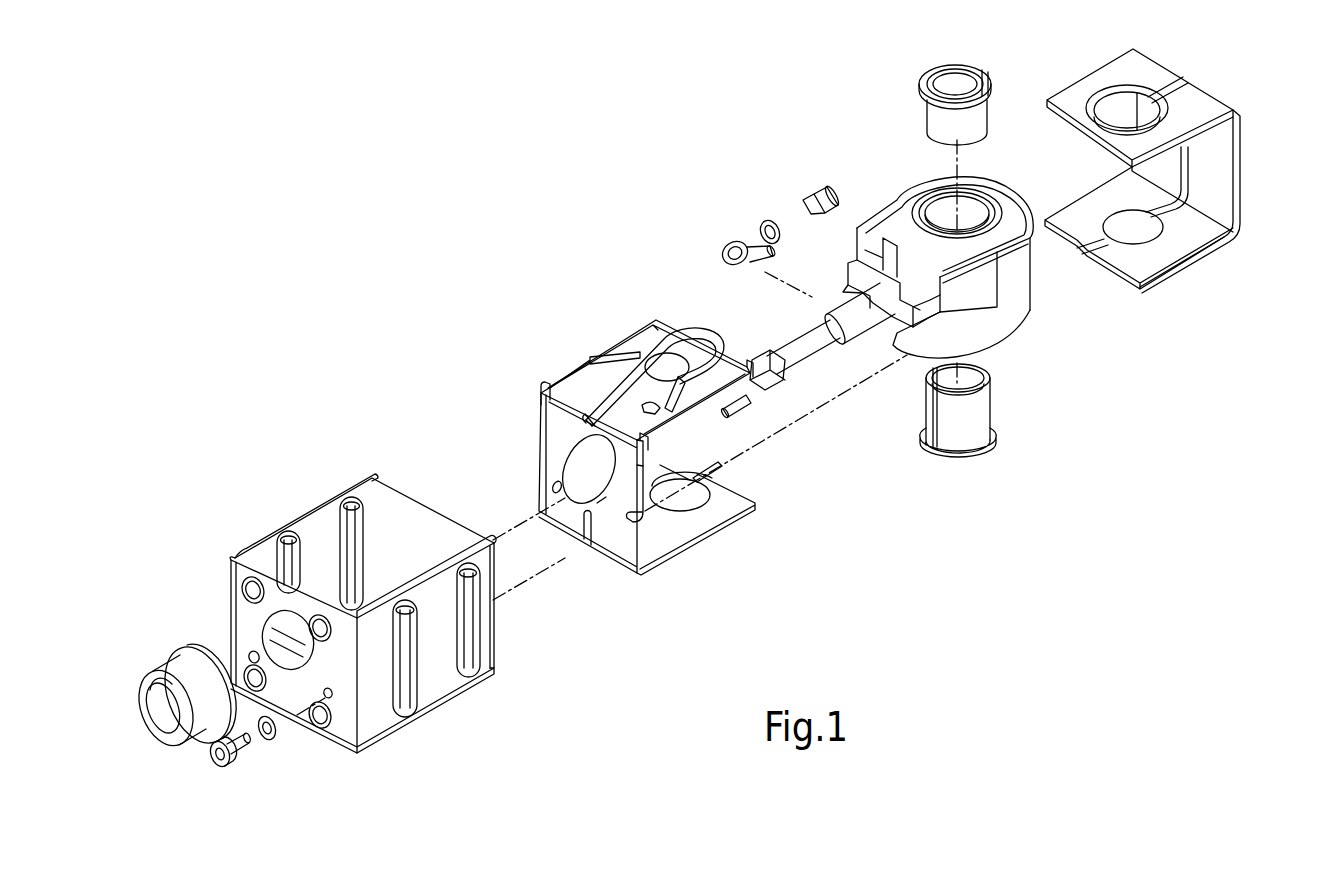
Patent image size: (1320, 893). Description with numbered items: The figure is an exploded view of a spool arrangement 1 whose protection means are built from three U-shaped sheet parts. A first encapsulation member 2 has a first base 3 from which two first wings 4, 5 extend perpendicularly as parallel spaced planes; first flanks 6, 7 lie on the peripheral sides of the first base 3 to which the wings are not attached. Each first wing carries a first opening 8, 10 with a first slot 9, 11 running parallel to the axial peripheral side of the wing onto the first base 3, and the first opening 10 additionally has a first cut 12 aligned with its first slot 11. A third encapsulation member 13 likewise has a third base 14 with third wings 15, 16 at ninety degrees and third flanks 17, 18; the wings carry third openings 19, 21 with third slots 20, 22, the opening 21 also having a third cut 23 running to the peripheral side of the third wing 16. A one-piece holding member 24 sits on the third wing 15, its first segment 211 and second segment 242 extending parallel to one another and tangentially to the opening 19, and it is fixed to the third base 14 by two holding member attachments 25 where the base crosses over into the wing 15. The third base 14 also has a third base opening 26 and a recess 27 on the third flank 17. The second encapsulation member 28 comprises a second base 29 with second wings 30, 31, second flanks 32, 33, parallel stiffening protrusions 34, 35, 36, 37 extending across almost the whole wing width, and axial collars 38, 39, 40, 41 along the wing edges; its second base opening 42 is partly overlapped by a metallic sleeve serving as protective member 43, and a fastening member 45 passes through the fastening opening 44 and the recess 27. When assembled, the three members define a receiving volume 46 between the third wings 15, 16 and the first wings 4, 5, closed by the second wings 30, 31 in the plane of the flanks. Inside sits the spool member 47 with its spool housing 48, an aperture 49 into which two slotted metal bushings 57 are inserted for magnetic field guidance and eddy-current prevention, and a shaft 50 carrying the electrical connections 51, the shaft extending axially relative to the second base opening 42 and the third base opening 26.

The spool arrangement 1 is at (537, 190).
The bushings 57 is at (530, 183).
The first encapsulation member 2 is at (1080, 72).
The first base 3 is at (1220, 163).
The first wing 4 is at (1187, 113).
The first wing 5 is at (1188, 235).
The first flank 6 is at (1238, 190).
The first flank 7 is at (1127, 90).
The first opening 8 is at (1112, 112).
The first slot 9 is at (1167, 95).
The first opening 10 is at (1140, 232).
The first slot 11 is at (1168, 200).
The first cut 12 is at (1083, 250).
The third encapsulation member 13 is at (620, 333).
The third base 14 is at (550, 433).
The third wing 15 is at (583, 387).
The third wing 16 is at (667, 540).
The third flank 17 is at (643, 470).
The third flank 18 is at (540, 470).
The third opening 19 is at (670, 360).
The third slot 20 is at (613, 393).
The third opening 21 is at (680, 503).
The third slot 22 is at (587, 547).
The third cut 23 is at (713, 483).
The holding member 24 is at (697, 333).
The holding member attachment 25 is at (548, 388).
The third base opening 26 is at (603, 493).
The recess 27 is at (638, 524).
The second encapsulation member 28 is at (228, 564).
The second base 29 is at (248, 627).
The second wing 30 is at (317, 540).
The second wing 31 is at (433, 680).
The second flank 32 is at (268, 577).
The second flank 33 is at (300, 718).
The protrusion 34 is at (293, 550).
The protrusion 35 is at (353, 517).
The protrusion 36 is at (403, 717).
The protrusion 37 is at (470, 680).
The collar 38 is at (370, 480).
The collar 39 is at (322, 720).
The collar 40 is at (440, 553).
The collar 41 is at (490, 677).
The second base opening 42 is at (257, 658).
The protective member 43 is at (207, 717).
The fastening opening 44 is at (330, 695).
The fastening member 45 is at (240, 748).
The receiving volume 46 is at (1080, 170).
The spool member 47 is at (887, 197).
The spool housing 48 is at (1003, 326).
The aperture 49 is at (947, 218).
The shaft 50 is at (860, 328).
The electrical connections 51 is at (750, 402).
The first leg of spring clip 211 is at (650, 350).
The second segment 242 is at (727, 363).